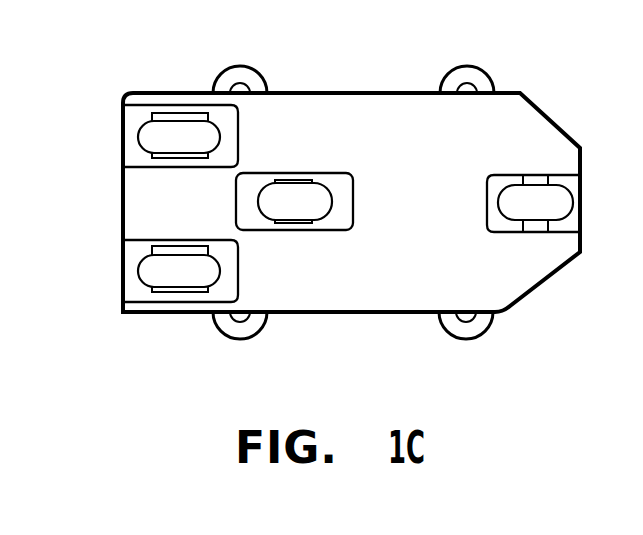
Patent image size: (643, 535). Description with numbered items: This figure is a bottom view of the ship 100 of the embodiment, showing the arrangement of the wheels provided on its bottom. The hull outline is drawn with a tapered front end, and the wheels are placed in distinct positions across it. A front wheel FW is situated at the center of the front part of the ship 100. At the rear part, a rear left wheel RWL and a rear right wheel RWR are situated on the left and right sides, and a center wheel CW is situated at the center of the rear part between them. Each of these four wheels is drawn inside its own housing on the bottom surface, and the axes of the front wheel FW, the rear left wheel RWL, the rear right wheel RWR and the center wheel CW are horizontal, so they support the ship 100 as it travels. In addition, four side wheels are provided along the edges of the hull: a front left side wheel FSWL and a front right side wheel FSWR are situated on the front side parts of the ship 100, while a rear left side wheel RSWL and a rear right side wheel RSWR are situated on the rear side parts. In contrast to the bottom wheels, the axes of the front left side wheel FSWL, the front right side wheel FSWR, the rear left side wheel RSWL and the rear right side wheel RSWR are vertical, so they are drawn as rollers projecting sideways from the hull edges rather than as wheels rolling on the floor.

The ship 100 is at (557, 123).
The rear right side wheel RSWR is at (258, 71).
The front right side wheel FSWR is at (478, 70).
The rear left side wheel RSWL is at (213, 318).
The front left side wheel FSWL is at (448, 325).
The rear right wheel RWR is at (138, 142).
The rear left wheel RWL is at (137, 273).
The center wheel CW is at (297, 198).
The front wheel FW is at (505, 205).